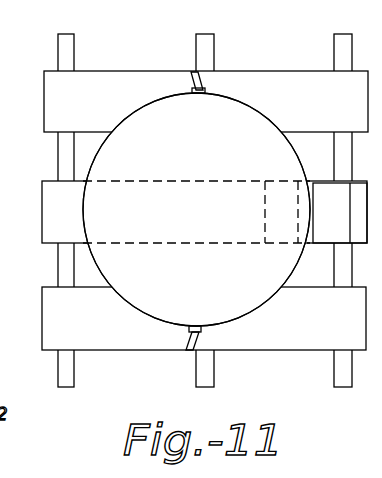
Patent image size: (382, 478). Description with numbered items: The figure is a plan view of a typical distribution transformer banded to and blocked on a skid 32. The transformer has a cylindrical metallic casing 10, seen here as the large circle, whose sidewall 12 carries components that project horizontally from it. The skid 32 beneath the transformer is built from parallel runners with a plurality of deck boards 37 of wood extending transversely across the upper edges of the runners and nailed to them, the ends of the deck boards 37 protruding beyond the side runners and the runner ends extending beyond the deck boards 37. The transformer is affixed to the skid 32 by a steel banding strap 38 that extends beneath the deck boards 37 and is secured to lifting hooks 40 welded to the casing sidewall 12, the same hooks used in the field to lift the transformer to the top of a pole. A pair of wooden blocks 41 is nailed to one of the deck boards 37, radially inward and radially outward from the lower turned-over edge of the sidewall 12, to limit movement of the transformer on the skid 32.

The casing 10 is at (208, 278).
The sidewall 12 is at (135, 314).
The skid 32 is at (313, 49).
The deck boards 37 is at (58, 123).
The steel banding strap 38 is at (190, 72).
The lifting hooks 40 is at (205, 90).
The wooden blocks 41 is at (325, 246).